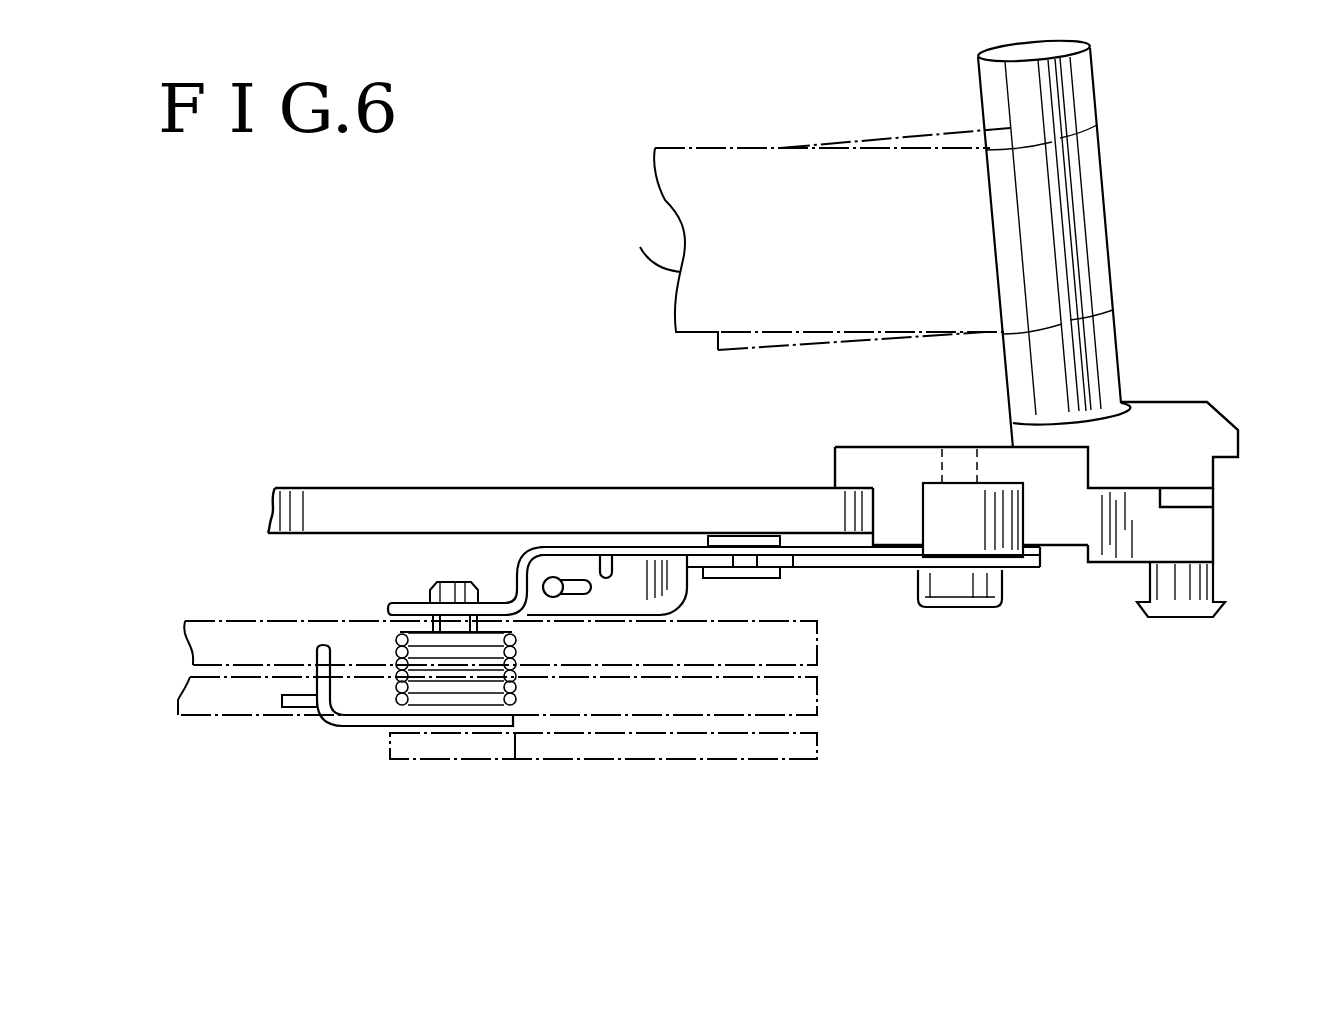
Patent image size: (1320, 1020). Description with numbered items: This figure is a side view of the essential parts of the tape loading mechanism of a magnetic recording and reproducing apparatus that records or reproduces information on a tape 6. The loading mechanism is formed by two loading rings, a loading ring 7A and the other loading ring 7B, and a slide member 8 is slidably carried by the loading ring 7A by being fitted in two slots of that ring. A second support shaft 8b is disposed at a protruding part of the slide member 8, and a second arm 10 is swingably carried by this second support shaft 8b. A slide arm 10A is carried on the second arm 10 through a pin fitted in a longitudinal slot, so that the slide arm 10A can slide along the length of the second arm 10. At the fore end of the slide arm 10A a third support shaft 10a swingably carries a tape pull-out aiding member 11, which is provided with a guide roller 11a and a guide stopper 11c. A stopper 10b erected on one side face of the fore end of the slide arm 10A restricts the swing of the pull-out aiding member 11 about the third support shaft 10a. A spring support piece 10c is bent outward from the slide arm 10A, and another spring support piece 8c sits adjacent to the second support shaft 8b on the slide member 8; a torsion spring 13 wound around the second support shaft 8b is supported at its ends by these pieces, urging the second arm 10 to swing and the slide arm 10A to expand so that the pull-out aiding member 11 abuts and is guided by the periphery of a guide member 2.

The guide member 2 is at (433, 503).
The tape 6 is at (683, 265).
The loading ring 7A is at (805, 693).
The loading ring 7B is at (800, 648).
The slide member 8 is at (690, 760).
The second support shaft 8b is at (448, 628).
The spring support piece 8c is at (313, 655).
The second arm 10 is at (843, 555).
The slide arm 10A is at (897, 565).
The third support shaft 10a is at (980, 608).
The stopper 10b is at (940, 500).
The spring support piece 10c is at (625, 572).
The tape pull-out aiding member 11 is at (1185, 527).
The guide roller 11a is at (1103, 357).
The guide stopper 11c is at (1185, 583).
The torsion spring 13 is at (297, 706).